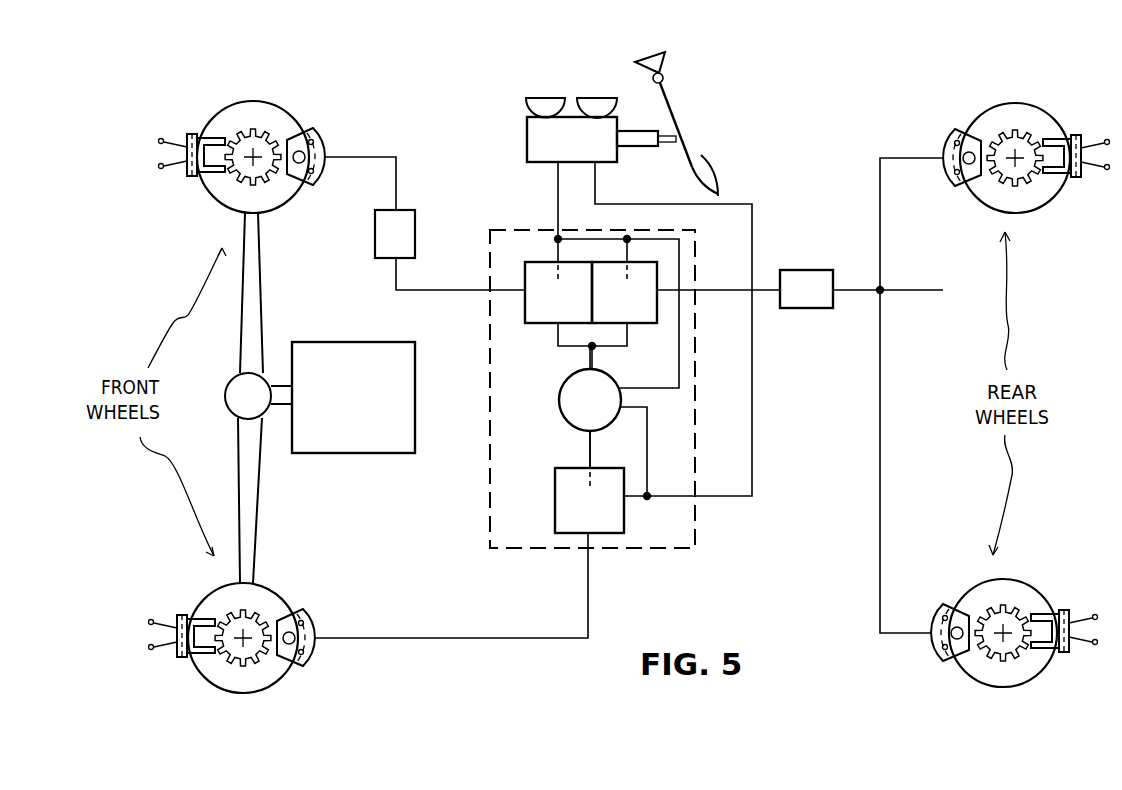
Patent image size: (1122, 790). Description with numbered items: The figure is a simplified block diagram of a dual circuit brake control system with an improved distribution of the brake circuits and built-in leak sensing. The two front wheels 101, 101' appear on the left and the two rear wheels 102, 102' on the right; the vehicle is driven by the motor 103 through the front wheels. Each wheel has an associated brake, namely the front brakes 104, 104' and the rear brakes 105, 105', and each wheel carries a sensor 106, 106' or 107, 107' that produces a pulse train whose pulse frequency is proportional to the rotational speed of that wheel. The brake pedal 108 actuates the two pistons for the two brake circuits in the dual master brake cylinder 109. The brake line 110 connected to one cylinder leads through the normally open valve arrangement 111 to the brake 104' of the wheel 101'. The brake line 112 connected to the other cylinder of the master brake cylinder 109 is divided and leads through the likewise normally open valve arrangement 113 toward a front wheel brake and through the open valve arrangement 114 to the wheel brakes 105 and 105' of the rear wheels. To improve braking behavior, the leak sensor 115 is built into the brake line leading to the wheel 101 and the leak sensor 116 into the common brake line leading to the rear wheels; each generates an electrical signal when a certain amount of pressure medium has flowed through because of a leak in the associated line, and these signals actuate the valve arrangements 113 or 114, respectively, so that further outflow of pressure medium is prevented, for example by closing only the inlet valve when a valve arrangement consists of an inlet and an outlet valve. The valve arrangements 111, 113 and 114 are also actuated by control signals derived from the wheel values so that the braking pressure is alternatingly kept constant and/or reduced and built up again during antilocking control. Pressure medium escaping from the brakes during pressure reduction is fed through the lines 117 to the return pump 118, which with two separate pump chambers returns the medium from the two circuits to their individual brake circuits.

The front wheel 101 is at (253, 138).
The front wheel 101' is at (243, 654).
The rear wheel 102 is at (1015, 137).
The rear wheel 102' is at (1004, 616).
The motor 103 is at (358, 440).
The brake 104 is at (327, 143).
The brake 104' is at (298, 611).
The brake 105 is at (930, 147).
The brake 105' is at (941, 607).
The sensor 106 is at (192, 185).
The sensor 106' is at (184, 606).
The sensor 107 is at (1074, 183).
The sensor 107' is at (1060, 661).
The brake pedal 108 is at (684, 152).
The dual master brake cylinder 109 is at (527, 147).
The brake line 110 is at (752, 440).
The valve arrangement 111 is at (568, 533).
The brake line 112 is at (558, 192).
The valve arrangement 113 is at (538, 317).
The valve arrangement 114 is at (637, 315).
The leak sensor 115 is at (375, 237).
The leak sensor 116 is at (803, 268).
The lines 117 is at (590, 446).
The return pump 118 is at (610, 410).